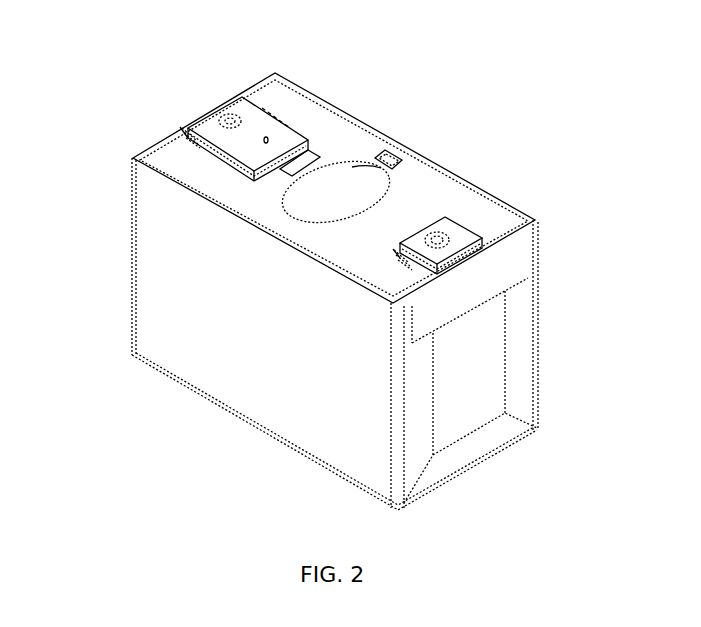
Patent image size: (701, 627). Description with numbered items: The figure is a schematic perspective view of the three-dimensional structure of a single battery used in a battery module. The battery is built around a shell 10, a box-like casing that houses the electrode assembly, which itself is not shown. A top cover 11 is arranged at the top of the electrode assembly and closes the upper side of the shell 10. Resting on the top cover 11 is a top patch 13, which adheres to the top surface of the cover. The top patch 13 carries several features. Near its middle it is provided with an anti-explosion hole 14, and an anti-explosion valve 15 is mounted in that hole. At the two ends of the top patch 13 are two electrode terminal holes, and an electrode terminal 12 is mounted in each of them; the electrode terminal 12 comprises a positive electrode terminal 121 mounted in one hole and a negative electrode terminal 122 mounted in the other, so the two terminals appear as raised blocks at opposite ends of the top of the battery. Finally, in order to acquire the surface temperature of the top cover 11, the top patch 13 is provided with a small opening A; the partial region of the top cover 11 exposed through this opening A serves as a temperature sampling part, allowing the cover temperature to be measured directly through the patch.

The shell 10 is at (147, 197).
The top cover 11 is at (150, 162).
The electrode terminal 12 is at (480, 232).
The positive electrode terminal 121 is at (448, 228).
The negative electrode terminal 122 is at (212, 122).
The top patch 13 is at (295, 108).
The anti-explosion hole 14 is at (338, 162).
The anti-explosion valve 15 is at (352, 167).
The opening A is at (393, 160).